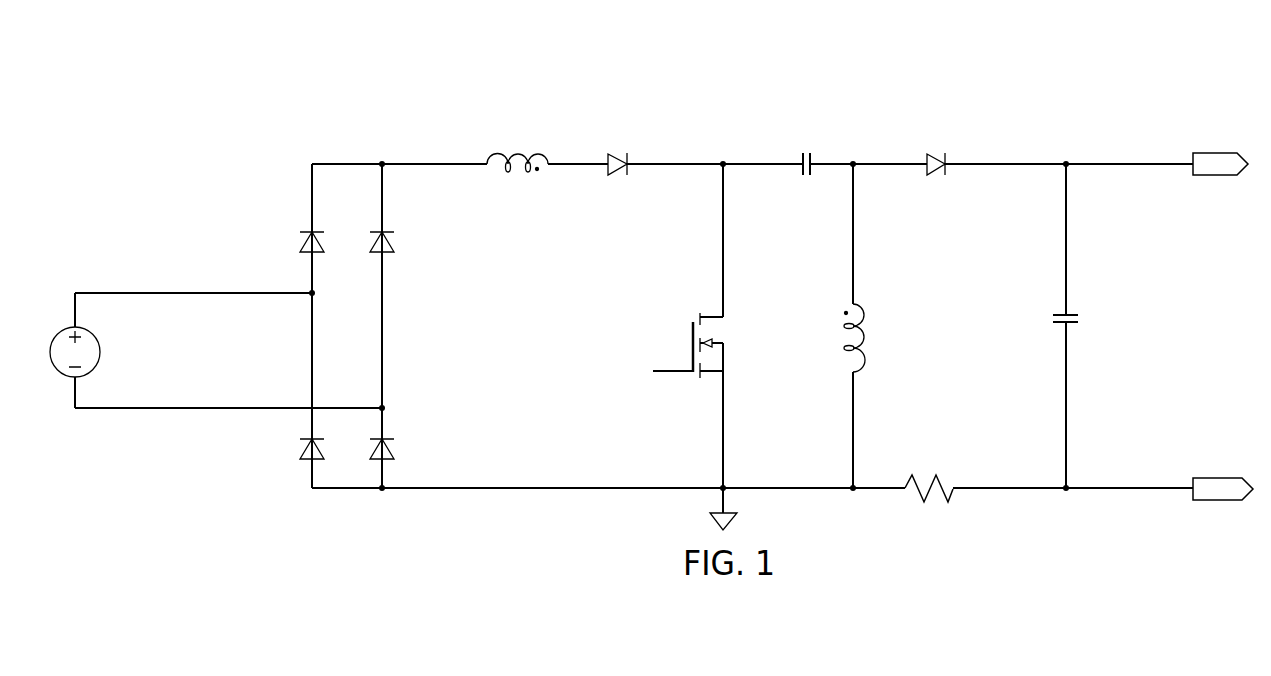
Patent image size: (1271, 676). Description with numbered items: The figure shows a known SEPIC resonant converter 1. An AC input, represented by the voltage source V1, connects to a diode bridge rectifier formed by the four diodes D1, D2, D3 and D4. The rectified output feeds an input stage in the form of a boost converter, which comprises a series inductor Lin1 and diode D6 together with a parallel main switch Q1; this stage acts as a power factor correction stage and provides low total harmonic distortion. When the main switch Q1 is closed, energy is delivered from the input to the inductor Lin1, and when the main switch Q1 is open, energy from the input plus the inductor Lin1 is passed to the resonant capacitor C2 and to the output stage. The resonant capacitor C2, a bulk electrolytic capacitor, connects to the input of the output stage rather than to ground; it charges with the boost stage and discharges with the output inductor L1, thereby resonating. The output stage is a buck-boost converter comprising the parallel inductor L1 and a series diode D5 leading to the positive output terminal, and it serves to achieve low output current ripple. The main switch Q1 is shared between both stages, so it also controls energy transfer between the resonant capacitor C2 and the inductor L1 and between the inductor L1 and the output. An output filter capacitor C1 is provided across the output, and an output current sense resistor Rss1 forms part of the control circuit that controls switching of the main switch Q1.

The SEPIC resonant converter 1 is at (361, 73).
The voltage source V1 is at (80, 350).
The diode D1 is at (304, 228).
The diode D2 is at (374, 228).
The diode D3 is at (304, 438).
The diode D4 is at (374, 438).
The series inductor Lin1 is at (517, 153).
The diode D6 is at (617, 154).
The main switch Q1 is at (720, 345).
The resonant capacitor C2 is at (803, 165).
The output inductor L1 is at (863, 338).
The series diode D5 is at (935, 154).
The output filter capacitor C1 is at (1069, 309).
The output current sense resistor Rss1 is at (929, 480).